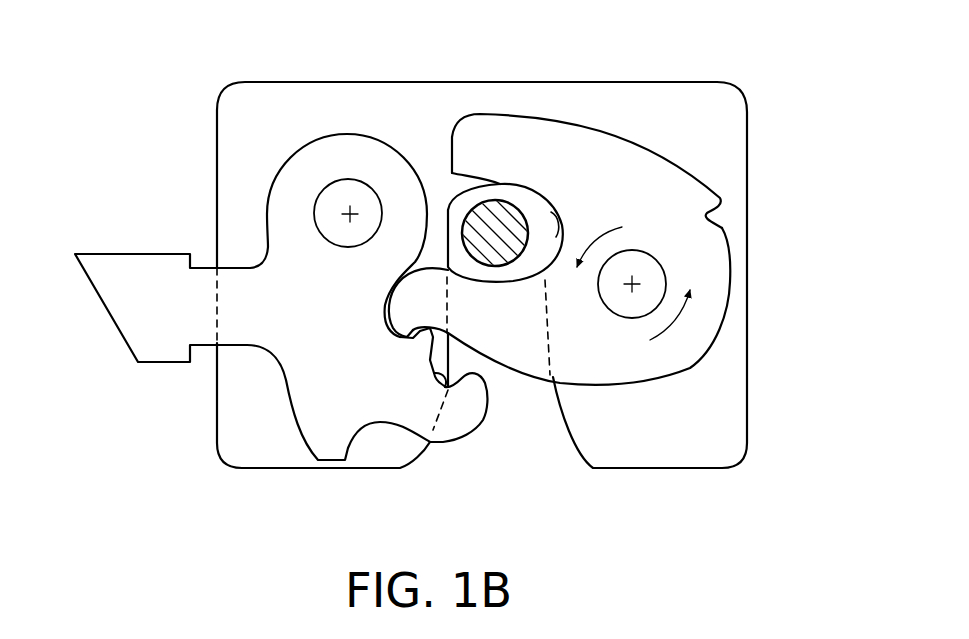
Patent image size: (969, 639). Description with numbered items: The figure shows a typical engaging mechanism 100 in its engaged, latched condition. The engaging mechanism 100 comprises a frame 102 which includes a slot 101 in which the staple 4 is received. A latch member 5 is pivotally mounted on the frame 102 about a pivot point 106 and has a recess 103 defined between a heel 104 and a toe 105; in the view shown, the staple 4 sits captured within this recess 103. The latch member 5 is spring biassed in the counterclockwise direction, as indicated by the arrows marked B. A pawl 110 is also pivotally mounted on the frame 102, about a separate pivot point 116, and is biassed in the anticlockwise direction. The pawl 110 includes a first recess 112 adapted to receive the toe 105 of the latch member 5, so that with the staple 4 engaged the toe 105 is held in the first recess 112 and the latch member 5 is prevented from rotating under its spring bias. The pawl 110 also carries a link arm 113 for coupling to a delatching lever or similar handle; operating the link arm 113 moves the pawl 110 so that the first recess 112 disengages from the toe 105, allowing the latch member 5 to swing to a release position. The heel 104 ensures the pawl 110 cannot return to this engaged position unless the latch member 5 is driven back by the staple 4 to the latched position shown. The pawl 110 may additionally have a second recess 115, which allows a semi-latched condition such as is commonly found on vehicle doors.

The engaging mechanism 100 is at (223, 72).
The slot 101 is at (513, 420).
The frame 102 is at (748, 112).
The recess 103 is at (550, 210).
The heel 104 is at (495, 128).
The toe 105 is at (410, 295).
The pivot point 106 is at (634, 282).
The pawl 110 is at (325, 449).
The first recess 112 is at (408, 344).
The link arm 113 is at (115, 302).
The second recess 115 is at (424, 374).
The pivot point 116 is at (350, 213).
The staple 4 is at (475, 218).
The latch member 5 is at (718, 278).